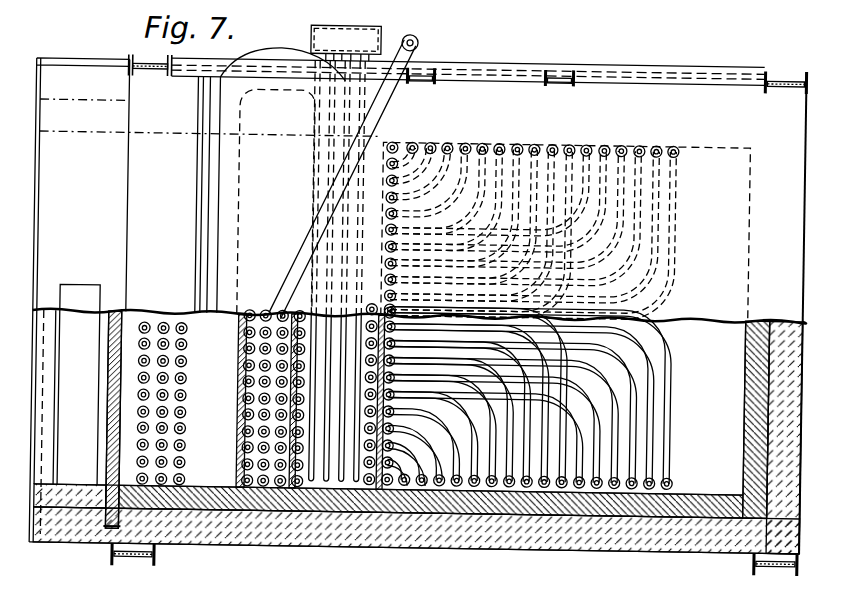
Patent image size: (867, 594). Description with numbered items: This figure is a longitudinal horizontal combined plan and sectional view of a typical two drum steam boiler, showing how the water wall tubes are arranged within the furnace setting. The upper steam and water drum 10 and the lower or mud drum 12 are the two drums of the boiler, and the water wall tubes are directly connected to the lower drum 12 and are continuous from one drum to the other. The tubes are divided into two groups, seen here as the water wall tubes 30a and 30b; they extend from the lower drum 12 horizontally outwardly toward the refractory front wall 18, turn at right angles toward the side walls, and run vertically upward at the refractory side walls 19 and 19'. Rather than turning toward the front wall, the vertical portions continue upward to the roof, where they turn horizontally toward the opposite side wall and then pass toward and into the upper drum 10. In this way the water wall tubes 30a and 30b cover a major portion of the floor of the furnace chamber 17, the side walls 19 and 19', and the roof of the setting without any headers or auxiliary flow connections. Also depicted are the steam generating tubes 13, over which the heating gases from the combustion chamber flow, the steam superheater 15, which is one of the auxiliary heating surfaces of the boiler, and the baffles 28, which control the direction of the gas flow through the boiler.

The upper steam and water drum 10 is at (267, 50).
The lower or mud drum 12 is at (290, 90).
The steam generating tubes 13 is at (186, 364).
The steam superheater 15 is at (348, 53).
The furnace chamber 17 is at (720, 407).
The refractory front wall 18 is at (746, 407).
The refractory side wall 19 is at (414, 536).
The refractory side wall 19' is at (468, 54).
The baffles 28 is at (240, 416).
The water wall tubes 30a is at (671, 432).
The water wall tubes 30b is at (672, 182).